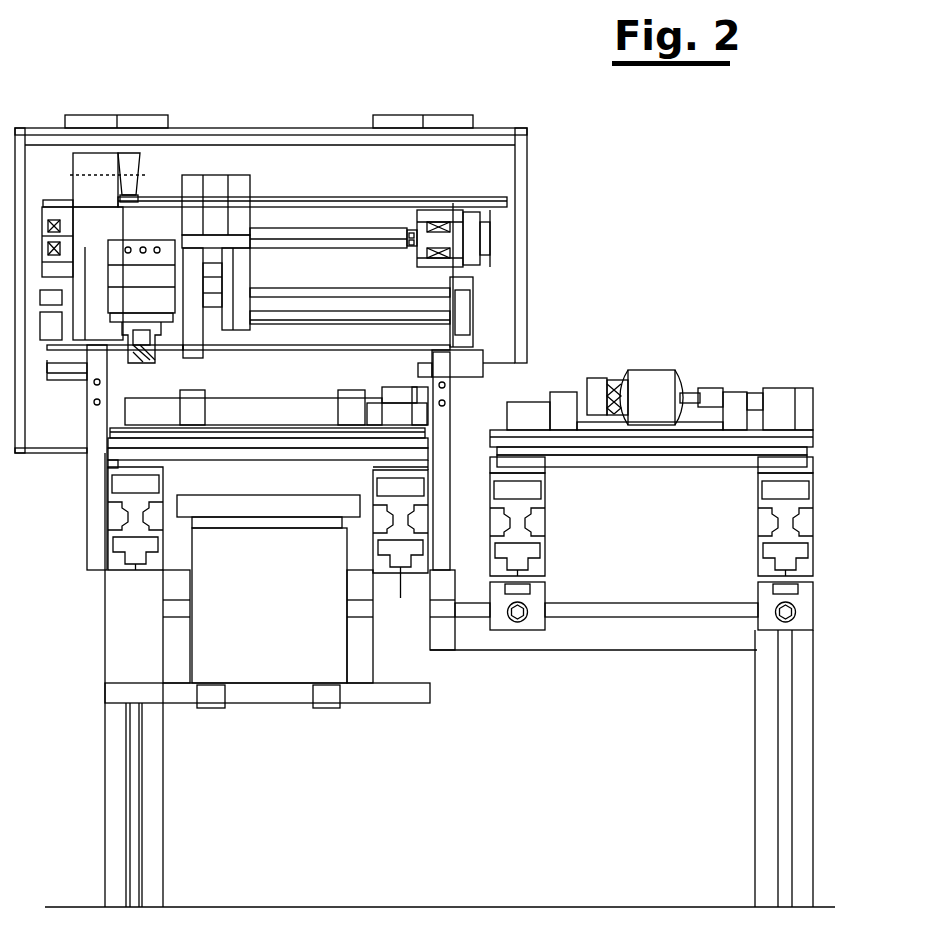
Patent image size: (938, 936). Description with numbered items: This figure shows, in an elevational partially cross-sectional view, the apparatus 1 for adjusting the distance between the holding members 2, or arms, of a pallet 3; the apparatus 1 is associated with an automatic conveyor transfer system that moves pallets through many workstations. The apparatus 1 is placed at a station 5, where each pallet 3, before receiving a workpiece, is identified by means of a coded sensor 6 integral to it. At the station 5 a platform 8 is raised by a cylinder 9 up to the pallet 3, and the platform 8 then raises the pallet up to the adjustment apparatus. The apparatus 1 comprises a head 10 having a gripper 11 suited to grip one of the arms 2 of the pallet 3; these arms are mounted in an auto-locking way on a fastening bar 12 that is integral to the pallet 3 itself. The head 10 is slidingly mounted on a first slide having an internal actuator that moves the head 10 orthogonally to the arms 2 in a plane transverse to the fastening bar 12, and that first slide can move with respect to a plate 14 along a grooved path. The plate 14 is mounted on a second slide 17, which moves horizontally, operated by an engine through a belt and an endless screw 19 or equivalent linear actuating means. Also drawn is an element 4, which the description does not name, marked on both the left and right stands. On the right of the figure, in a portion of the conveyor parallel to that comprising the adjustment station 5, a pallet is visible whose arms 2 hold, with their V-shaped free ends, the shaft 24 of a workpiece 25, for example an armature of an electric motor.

The apparatus 1 is at (567, 273).
The holding members 2 is at (147, 340).
The pallet 3 is at (133, 445).
The linear unit 4 is at (95, 592).
The station 5 is at (283, 714).
The coded sensor 6 is at (402, 390).
The platform 8 is at (255, 507).
The cylinder 9 is at (242, 578).
The head 10 is at (155, 248).
The gripper 11 is at (193, 340).
The fastening bar 12 is at (383, 398).
The plate 14 is at (257, 240).
The second slide 17 is at (93, 217).
The endless screw 19 is at (303, 302).
The shaft 24 is at (712, 390).
The workpiece 25 is at (647, 382).